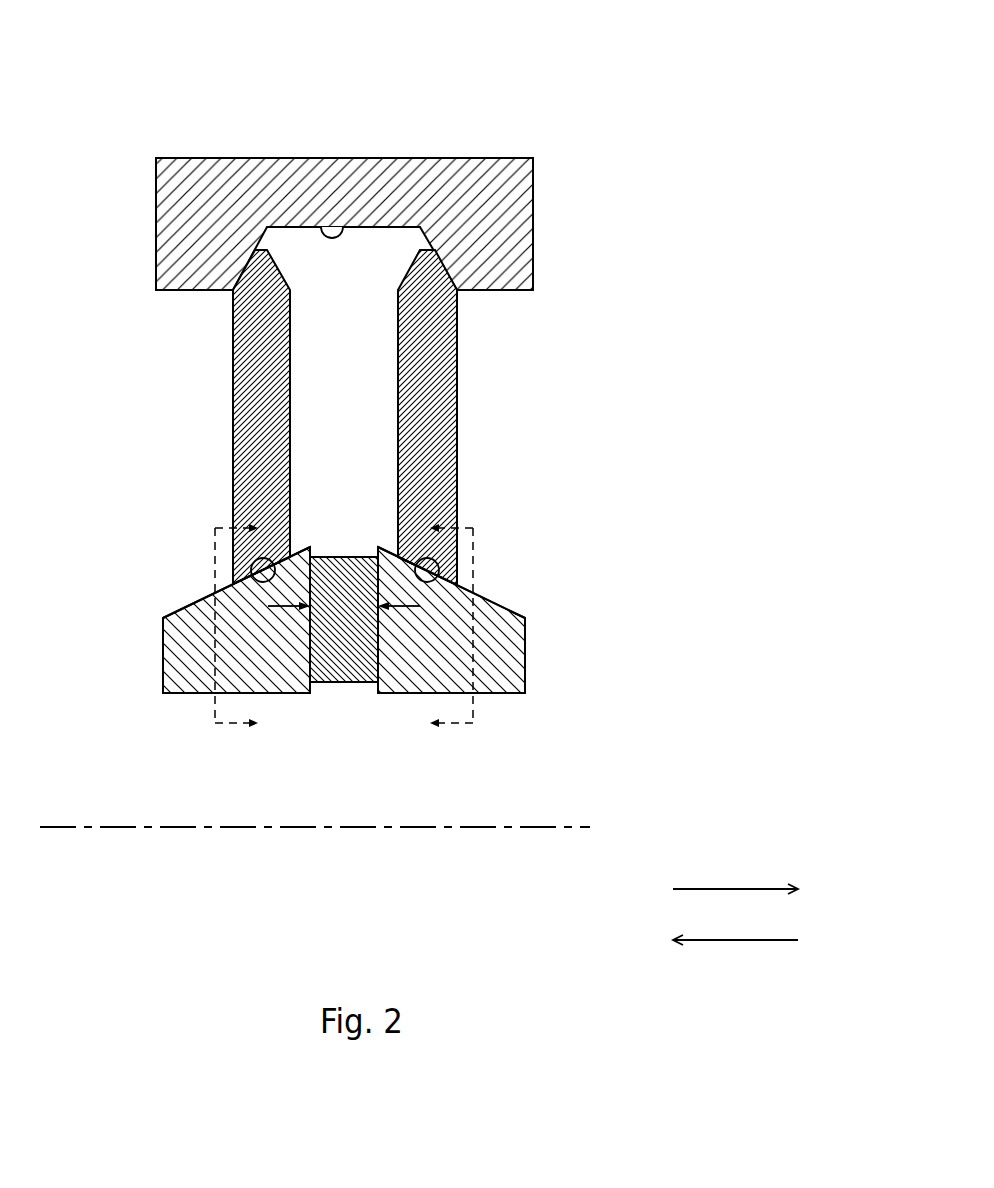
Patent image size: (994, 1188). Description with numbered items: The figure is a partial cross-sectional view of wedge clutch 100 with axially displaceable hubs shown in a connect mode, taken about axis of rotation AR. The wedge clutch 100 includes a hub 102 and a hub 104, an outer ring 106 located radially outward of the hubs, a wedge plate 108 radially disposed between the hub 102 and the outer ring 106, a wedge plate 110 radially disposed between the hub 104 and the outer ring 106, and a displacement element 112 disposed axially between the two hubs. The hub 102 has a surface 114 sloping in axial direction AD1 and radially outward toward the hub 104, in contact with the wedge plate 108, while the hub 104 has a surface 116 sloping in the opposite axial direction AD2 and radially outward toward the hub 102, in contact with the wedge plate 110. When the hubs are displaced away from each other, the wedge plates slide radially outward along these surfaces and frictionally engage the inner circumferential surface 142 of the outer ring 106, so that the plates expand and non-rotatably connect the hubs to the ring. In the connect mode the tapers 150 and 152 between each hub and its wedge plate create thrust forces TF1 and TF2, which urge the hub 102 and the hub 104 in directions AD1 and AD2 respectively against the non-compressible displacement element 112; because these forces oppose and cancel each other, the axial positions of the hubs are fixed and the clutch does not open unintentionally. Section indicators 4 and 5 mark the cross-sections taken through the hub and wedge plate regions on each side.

The wedge clutch 100 is at (389, 381).
The hub 102 is at (181, 702).
The hub 104 is at (507, 702).
The outer ring 106 is at (402, 150).
The wedge plate 108 is at (224, 448).
The wedge plate 110 is at (466, 448).
The displacement element 112 is at (327, 694).
The surface 114 is at (190, 605).
The surface 116 is at (497, 604).
The inner circumferential surface 142 is at (321, 226).
The taper 150 is at (251, 570).
The taper 152 is at (439, 570).
The thrust force TF1 is at (290, 600).
The thrust force TF2 is at (397, 600).
The axis of rotation AR is at (505, 830).
The axial direction AD1 is at (712, 886).
The axial direction AD2 is at (735, 943).
The section line 4 is at (245, 629).
The section line 5 is at (441, 629).